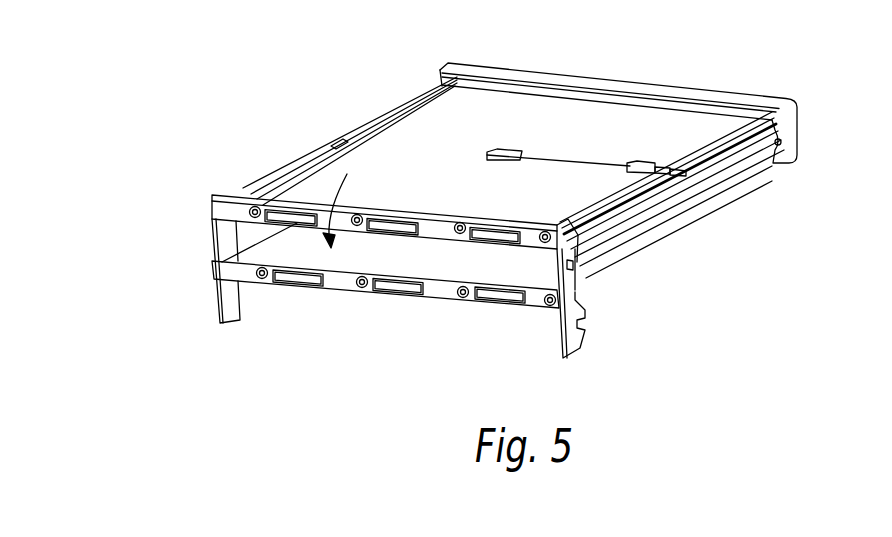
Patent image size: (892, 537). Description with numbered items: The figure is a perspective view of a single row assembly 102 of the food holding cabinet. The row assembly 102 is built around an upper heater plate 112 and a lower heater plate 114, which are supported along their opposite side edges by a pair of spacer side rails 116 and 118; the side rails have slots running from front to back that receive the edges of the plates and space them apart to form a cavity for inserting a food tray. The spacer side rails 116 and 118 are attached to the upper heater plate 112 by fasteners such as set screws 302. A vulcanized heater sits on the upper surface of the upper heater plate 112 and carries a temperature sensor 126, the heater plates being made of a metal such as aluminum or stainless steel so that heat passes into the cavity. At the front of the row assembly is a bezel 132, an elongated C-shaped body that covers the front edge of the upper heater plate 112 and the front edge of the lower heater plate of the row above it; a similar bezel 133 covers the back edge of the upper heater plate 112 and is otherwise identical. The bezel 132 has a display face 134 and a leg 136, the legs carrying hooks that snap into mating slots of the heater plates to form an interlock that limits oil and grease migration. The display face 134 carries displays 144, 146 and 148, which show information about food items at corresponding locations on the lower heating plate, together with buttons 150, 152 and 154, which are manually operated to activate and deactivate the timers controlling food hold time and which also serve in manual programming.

The row assembly 102 is at (148, 221).
The upper heater plate 112 is at (403, 103).
The lower heater plate 114 is at (352, 196).
The spacer side rail 116 is at (404, 88).
The spacer side rail 118 is at (727, 136).
The temperature sensor 126 is at (513, 149).
The bezel 132 is at (527, 222).
The bezel 133 is at (650, 82).
The display face 134 is at (210, 208).
The leg 136 is at (230, 195).
The display 144 is at (273, 193).
The display 146 is at (398, 210).
The display 148 is at (498, 220).
The button 150 is at (259, 221).
The button 152 is at (360, 226).
The button 154 is at (462, 242).
The set screw 302 is at (293, 155).